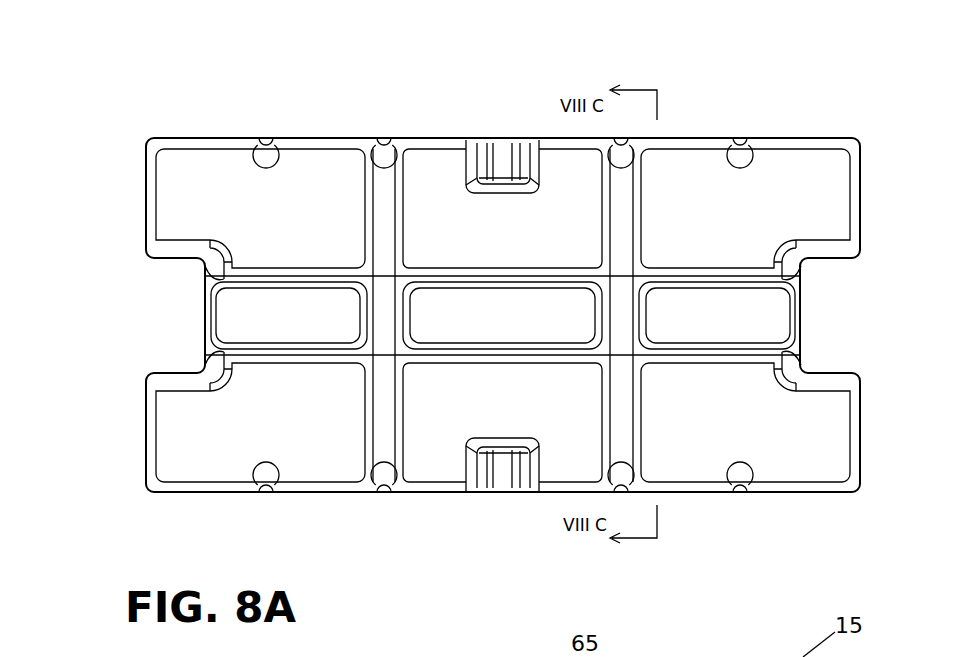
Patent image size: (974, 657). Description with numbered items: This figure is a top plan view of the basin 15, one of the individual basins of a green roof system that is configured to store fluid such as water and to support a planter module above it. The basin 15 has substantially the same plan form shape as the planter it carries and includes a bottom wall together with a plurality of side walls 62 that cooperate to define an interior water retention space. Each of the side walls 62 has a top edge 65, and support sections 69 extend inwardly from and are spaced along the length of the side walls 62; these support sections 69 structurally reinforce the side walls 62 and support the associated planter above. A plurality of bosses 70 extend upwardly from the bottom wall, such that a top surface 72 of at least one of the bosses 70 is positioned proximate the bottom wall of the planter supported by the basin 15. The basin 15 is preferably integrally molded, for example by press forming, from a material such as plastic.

The basin 15 is at (869, 113).
The side walls 62 is at (318, 138).
The top edge 65 is at (798, 138).
The support section 69 is at (265, 473).
The bosses 70 is at (453, 267).
The top surface 72 is at (543, 300).